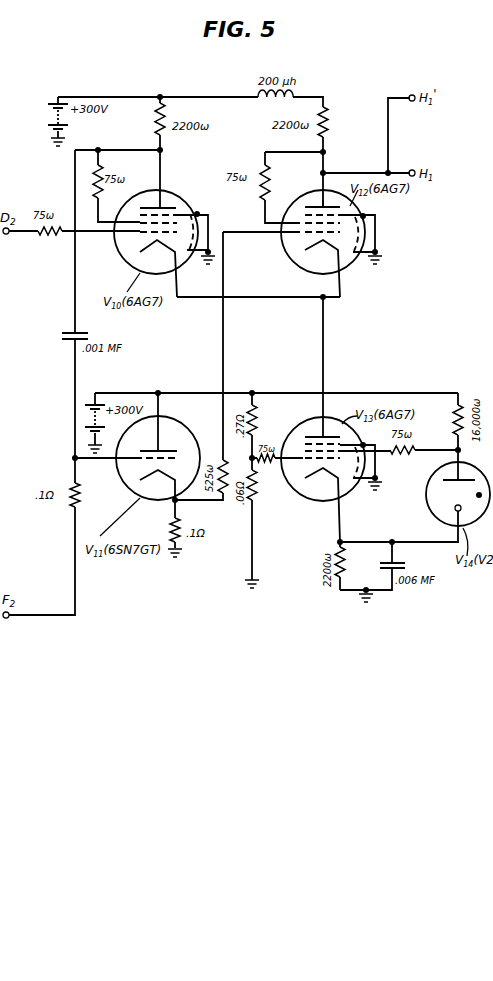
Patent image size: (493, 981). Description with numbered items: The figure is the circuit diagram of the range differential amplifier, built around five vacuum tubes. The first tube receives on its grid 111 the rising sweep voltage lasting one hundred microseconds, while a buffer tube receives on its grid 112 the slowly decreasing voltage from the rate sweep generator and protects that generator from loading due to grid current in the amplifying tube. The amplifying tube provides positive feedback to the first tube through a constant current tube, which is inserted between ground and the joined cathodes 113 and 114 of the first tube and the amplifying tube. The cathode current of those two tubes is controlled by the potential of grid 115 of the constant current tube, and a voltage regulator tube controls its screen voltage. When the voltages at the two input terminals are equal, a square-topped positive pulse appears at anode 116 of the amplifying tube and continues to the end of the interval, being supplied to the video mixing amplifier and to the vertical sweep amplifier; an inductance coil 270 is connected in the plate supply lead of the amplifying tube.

The grid 111 is at (136, 236).
The grid 112 is at (137, 461).
The cathode 113 is at (178, 256).
The cathode 114 is at (341, 257).
The grid 115 is at (304, 457).
The anode 116 is at (317, 205).
The inductance coil (200 microhenry) 270 is at (292, 96).